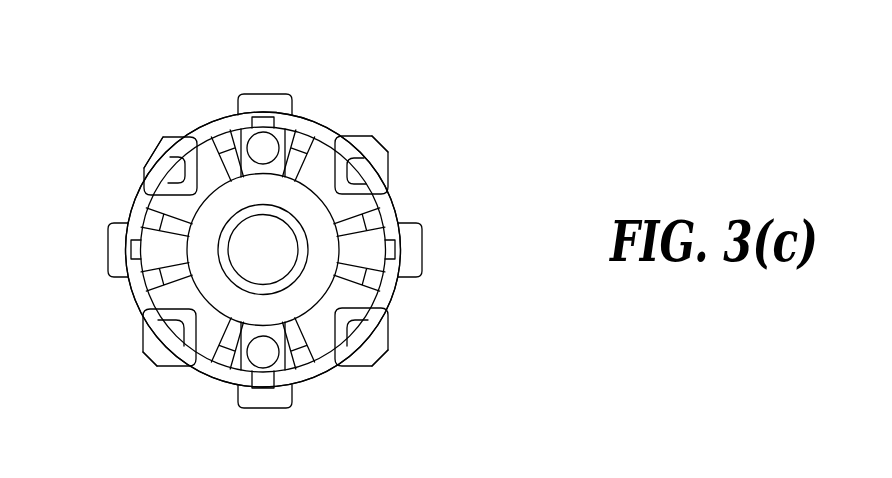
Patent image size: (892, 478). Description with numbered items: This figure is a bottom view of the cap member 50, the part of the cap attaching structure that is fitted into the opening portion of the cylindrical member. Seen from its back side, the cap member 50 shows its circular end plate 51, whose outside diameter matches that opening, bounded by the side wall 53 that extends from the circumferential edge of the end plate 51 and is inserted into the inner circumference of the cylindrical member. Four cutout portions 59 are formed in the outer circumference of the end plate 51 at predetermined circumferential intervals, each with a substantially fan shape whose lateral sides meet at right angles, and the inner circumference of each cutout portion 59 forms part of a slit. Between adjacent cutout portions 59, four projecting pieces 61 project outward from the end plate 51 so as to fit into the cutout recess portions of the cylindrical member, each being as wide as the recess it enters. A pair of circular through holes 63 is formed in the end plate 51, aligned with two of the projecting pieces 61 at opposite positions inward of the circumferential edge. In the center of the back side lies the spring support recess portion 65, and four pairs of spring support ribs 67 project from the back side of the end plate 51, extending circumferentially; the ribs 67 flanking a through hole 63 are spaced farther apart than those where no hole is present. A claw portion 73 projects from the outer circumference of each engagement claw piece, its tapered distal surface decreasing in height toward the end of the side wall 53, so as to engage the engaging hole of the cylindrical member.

The cap member 50 is at (338, 123).
The end plate 51 is at (362, 204).
The side wall 53 is at (318, 128).
The cutout portion 59 is at (178, 180).
The projecting piece 61 is at (263, 93).
The circular through hole 63 is at (253, 138).
The spring support recess portion 65 is at (310, 297).
The spring support rib 67 is at (222, 142).
The claw portion 73 is at (153, 150).